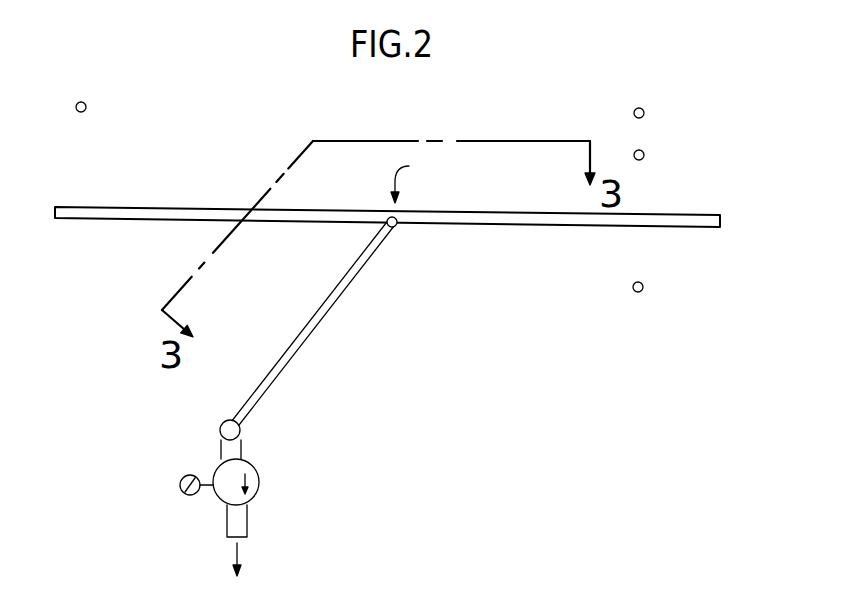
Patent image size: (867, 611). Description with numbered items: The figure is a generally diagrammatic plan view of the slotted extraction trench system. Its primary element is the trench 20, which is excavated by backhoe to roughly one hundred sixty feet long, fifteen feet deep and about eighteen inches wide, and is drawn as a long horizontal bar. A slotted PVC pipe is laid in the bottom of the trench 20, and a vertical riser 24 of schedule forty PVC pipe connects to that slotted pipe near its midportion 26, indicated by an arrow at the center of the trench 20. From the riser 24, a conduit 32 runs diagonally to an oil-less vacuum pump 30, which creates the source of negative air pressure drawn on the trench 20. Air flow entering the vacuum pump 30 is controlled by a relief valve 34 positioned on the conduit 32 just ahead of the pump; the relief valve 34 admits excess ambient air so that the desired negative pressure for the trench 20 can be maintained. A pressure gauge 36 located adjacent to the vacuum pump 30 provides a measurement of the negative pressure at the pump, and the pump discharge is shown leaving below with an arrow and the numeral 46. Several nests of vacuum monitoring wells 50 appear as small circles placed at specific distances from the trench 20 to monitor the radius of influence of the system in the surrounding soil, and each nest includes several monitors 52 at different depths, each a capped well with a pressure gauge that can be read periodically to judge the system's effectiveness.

The trench 20 is at (463, 213).
The vertical riser 24 is at (396, 226).
The midportion 26 is at (414, 179).
The vacuum pump 30 is at (217, 469).
The conduit 32 is at (305, 340).
The relief valve 34 is at (212, 415).
The pressure gauge 36 is at (180, 485).
The outlet 46 is at (246, 538).
The vacuum monitoring wells 50 is at (99, 85).
The monitors 52 is at (639, 160).